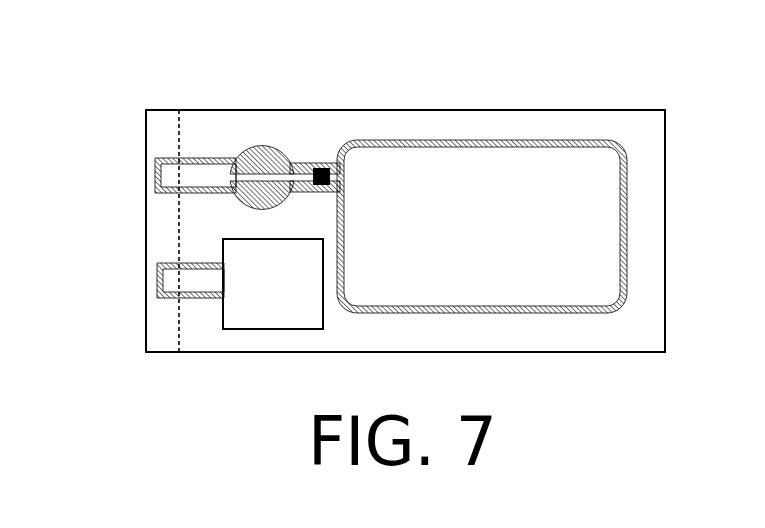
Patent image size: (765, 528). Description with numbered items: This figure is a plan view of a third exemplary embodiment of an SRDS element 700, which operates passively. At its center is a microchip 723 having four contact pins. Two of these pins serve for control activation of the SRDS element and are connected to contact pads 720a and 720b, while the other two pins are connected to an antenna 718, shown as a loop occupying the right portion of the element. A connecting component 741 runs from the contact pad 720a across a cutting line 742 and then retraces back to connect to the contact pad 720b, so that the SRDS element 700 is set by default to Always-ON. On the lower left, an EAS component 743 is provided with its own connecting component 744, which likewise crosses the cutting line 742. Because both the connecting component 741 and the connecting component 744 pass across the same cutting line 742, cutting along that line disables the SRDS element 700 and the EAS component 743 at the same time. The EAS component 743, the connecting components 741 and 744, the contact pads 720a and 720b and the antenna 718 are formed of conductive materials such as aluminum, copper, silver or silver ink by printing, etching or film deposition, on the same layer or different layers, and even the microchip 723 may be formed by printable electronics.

The SRDS element 700 is at (132, 83).
The antenna 718 is at (512, 305).
The contact pad 720a is at (275, 153).
The contact pad 720b is at (242, 197).
The microchip 723 is at (330, 177).
The connecting component 741 is at (195, 160).
The cutting line 742 is at (178, 243).
The EAS component 743 is at (252, 317).
The connecting component 744 is at (158, 282).